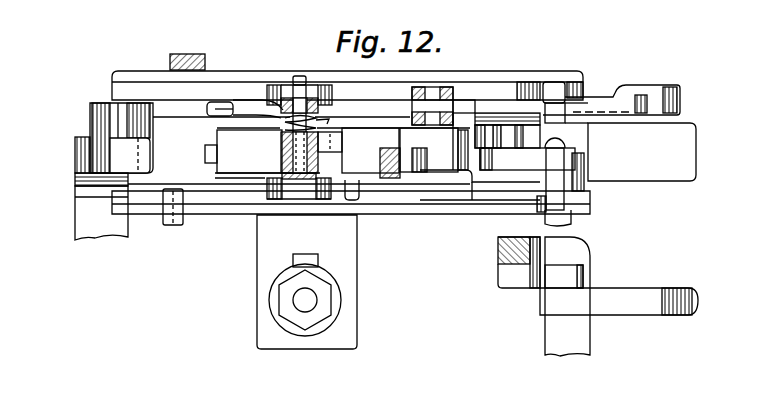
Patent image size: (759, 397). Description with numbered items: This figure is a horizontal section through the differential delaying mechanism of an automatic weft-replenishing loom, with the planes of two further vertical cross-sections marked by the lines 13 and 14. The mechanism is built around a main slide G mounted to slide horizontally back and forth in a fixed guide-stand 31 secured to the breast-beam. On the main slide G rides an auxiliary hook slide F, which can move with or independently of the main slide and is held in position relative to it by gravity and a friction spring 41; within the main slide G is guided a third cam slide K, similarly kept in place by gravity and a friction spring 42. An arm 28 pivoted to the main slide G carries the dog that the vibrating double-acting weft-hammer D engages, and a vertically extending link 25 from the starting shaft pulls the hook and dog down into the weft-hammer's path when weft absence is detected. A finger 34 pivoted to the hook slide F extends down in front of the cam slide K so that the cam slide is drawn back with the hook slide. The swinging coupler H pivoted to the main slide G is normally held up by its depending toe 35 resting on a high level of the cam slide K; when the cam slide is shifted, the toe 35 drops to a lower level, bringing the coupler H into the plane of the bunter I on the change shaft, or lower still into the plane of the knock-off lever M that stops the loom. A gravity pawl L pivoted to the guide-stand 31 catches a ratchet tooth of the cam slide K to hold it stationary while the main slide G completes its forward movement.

The section line 13— 13 is at (300, 380).
The section line 14— 14 is at (556, 265).
The link 25 is at (184, 54).
The arm 28 is at (281, 155).
The guide-stand 31 is at (136, 82).
The finger 34 is at (622, 103).
The toe 35 is at (390, 180).
The friction spring 41 is at (258, 106).
The friction spring 42 is at (270, 182).
The weft-hammer D is at (130, 155).
The hook slide F is at (490, 105).
The main slide G is at (124, 94).
The coupler H is at (330, 106).
The bunter I is at (600, 302).
The cam slide K is at (217, 138).
The gravity pawl L is at (508, 160).
The knock-off lever M is at (562, 334).